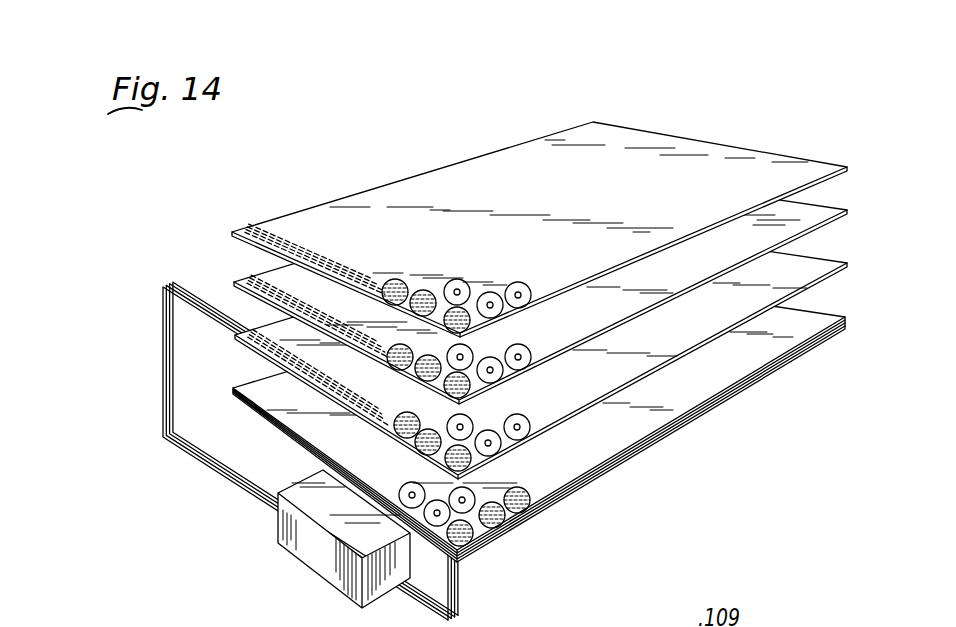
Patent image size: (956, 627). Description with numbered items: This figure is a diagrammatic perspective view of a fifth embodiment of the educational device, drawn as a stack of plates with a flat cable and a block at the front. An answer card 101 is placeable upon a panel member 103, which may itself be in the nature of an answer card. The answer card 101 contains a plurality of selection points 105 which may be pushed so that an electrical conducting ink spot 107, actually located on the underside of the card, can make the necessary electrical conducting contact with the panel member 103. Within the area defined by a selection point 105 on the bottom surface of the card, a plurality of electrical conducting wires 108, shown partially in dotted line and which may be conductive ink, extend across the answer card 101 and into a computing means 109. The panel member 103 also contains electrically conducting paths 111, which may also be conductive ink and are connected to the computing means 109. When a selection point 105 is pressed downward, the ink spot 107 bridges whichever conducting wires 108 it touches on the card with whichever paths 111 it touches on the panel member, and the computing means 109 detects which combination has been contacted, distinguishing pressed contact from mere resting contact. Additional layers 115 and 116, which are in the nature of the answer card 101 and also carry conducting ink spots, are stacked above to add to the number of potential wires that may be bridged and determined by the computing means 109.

The answer card 101 is at (572, 395).
The panel member 103 is at (600, 442).
The selection points 105 is at (432, 456).
The electrical conducting ink spot 107 is at (514, 425).
The electrical conducting wires 108 is at (265, 336).
The computing means 109 is at (323, 556).
The electrically conducting paths 111 is at (455, 585).
The additional layer 115 is at (580, 335).
The additional layer 116 is at (630, 254).